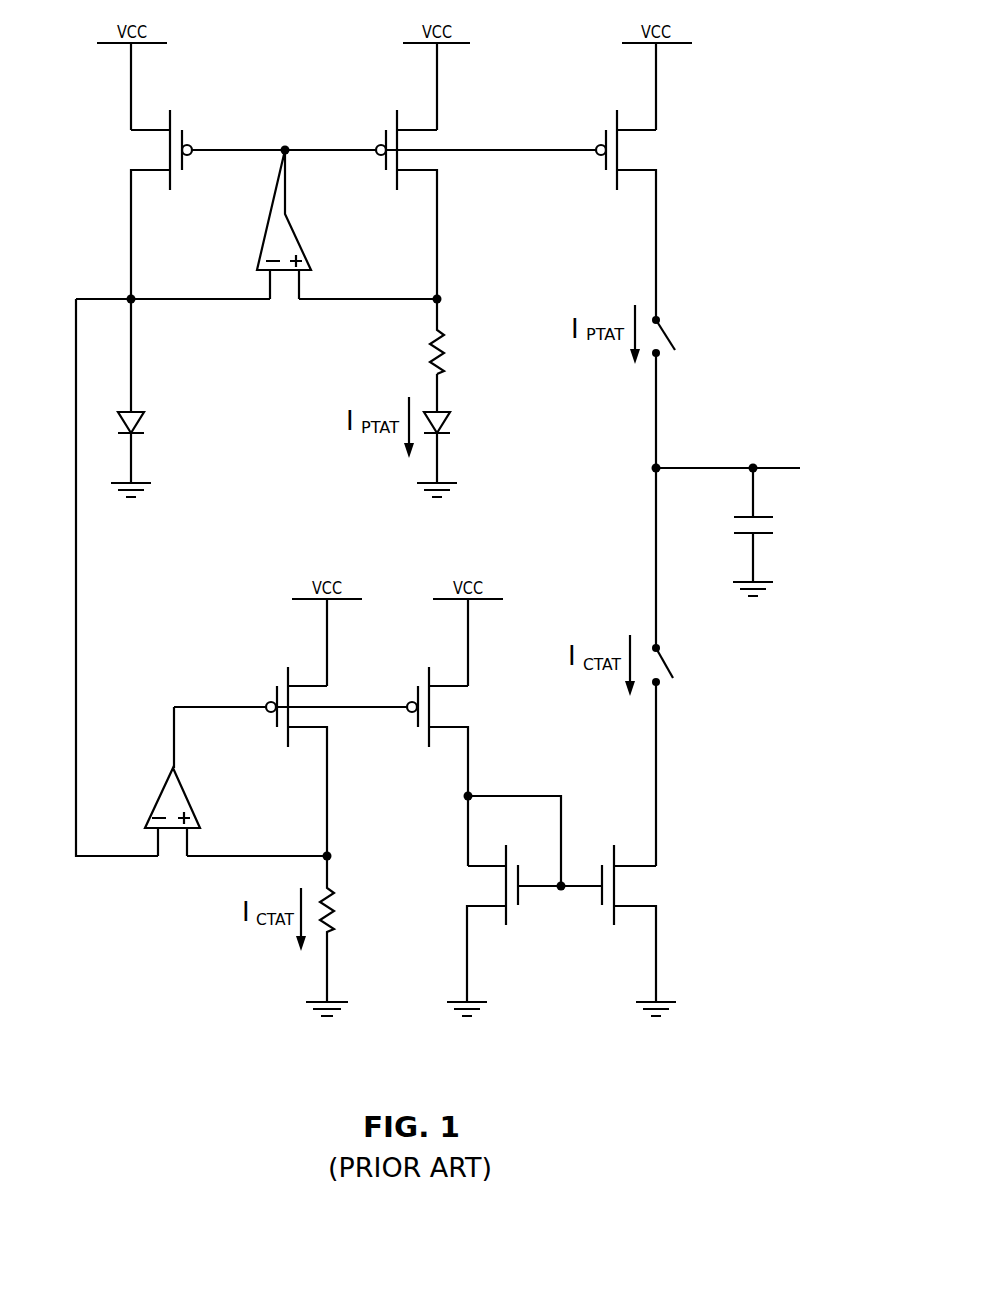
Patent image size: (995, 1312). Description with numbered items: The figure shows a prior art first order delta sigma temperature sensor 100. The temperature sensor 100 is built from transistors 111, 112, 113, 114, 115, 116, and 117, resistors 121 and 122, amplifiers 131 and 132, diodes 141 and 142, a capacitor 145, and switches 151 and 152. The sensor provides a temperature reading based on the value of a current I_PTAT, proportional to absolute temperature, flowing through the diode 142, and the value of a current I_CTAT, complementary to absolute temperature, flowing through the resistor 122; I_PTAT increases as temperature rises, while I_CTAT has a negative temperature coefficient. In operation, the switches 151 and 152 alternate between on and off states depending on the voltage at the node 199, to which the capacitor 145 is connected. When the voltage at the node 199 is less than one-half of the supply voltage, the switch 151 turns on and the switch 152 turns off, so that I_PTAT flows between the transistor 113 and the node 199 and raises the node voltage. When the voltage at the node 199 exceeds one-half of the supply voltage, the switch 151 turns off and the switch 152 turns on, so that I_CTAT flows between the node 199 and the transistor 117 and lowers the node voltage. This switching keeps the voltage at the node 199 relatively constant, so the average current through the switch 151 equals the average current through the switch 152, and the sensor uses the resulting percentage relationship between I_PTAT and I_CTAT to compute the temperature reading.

The first order delta sigma temperature sensor 100 is at (778, 68).
The transistor 111 is at (170, 120).
The transistor 112 is at (397, 120).
The transistor 113 is at (617, 120).
The transistor 114 is at (288, 680).
The transistor 115 is at (429, 680).
The transistor 116 is at (507, 858).
The transistor 117 is at (615, 858).
The resistor 121 is at (444, 345).
The resistor 122 is at (336, 900).
The amplifier 131 is at (295, 232).
The amplifier 132 is at (186, 787).
The diode 141 is at (137, 411).
The diode 142 is at (441, 411).
The capacitor 145 is at (776, 527).
The switch 151 is at (671, 332).
The switch 152 is at (669, 656).
The node 199 is at (660, 466).